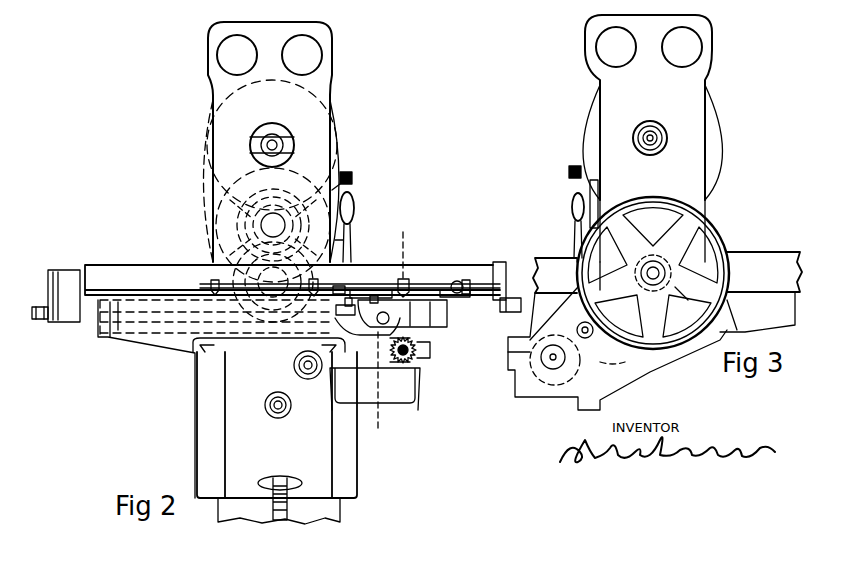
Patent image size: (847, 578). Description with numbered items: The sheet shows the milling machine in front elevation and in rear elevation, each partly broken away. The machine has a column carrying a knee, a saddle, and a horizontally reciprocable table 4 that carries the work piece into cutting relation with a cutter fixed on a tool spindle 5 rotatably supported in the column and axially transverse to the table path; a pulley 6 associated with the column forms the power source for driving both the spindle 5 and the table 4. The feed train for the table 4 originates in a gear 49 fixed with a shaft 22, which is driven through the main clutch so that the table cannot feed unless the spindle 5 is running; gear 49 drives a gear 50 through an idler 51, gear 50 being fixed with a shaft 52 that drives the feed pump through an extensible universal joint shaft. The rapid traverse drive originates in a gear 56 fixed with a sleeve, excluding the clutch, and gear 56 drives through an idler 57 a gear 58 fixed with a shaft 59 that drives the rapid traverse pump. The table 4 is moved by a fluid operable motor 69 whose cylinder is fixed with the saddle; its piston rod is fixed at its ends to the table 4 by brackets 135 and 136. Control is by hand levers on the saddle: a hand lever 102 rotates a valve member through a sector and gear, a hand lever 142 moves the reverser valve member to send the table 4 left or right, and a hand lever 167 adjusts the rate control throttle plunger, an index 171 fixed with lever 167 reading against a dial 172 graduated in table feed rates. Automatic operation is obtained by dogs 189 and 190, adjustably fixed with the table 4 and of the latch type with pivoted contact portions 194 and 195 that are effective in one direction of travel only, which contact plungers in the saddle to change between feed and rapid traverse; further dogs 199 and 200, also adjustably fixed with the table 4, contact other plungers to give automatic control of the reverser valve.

In FIG. 2, the table 4 is at (118, 268).
In FIG. 2, the tool spindle 5 is at (280, 133).
In FIG. 2, the pulley 6 is at (391, 233).
In FIG. 3, the shaft 22 is at (665, 270).
In FIG. 3, the gear 49 is at (653, 250).
In FIG. 3, the gear 50 is at (582, 326).
In FIG. 3, the idler 51 is at (630, 262).
In FIG. 3, the shaft 52 is at (590, 292).
In FIG. 3, the gear 56 is at (687, 302).
In FIG. 3, the idler 57 is at (640, 362).
In FIG. 3, the gear 58 is at (580, 368).
In FIG. 3, the shaft 59 is at (600, 336).
In FIG. 2, the fluid operable motor 69 is at (153, 348).
In FIG. 2, the hand lever 102 is at (386, 290).
In FIG. 2, the bracket 135 is at (45, 322).
In FIG. 2, the bracket 136 is at (505, 298).
In FIG. 2, the hand lever 142 is at (391, 323).
In FIG. 2, the hand lever 167 is at (418, 358).
In FIG. 2, the index 171 is at (412, 342).
In FIG. 2, the dial 172 is at (430, 350).
In FIG. 2, the dog 189 is at (320, 283).
In FIG. 2, the dog 190 is at (464, 280).
In FIG. 2, the pivoted contact portion 194 is at (345, 288).
In FIG. 2, the pivoted contact portion 195 is at (450, 289).
In FIG. 2, the dog 199 is at (213, 282).
In FIG. 2, the dog 200 is at (405, 282).